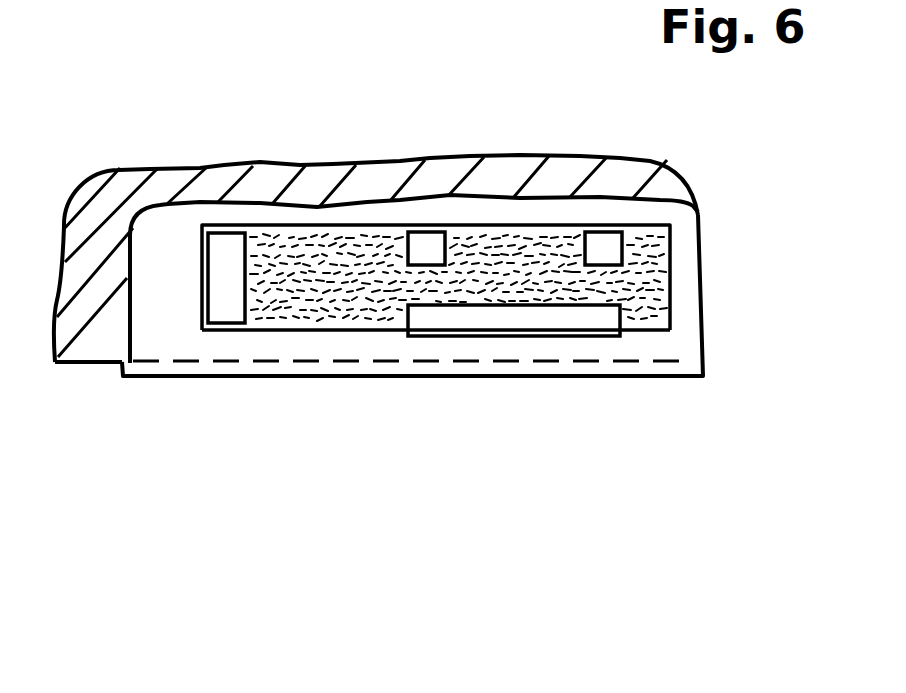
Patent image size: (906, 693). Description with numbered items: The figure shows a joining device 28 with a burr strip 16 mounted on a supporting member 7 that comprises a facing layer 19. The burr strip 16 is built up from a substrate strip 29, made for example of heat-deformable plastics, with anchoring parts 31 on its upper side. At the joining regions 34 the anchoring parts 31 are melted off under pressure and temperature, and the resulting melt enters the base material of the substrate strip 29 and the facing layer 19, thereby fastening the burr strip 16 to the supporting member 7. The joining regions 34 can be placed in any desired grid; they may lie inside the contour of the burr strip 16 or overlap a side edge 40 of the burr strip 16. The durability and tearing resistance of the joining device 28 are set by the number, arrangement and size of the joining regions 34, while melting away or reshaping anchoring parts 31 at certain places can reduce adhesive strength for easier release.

The supporting member 7 is at (150, 197).
The burr strip 16 is at (653, 288).
The facing layer 19 is at (683, 337).
The joining device 28 is at (592, 214).
The substrate strip 29 is at (495, 223).
The anchoring parts 31 is at (272, 250).
The joining regions 34 is at (222, 250).
The side edge 40 is at (326, 340).